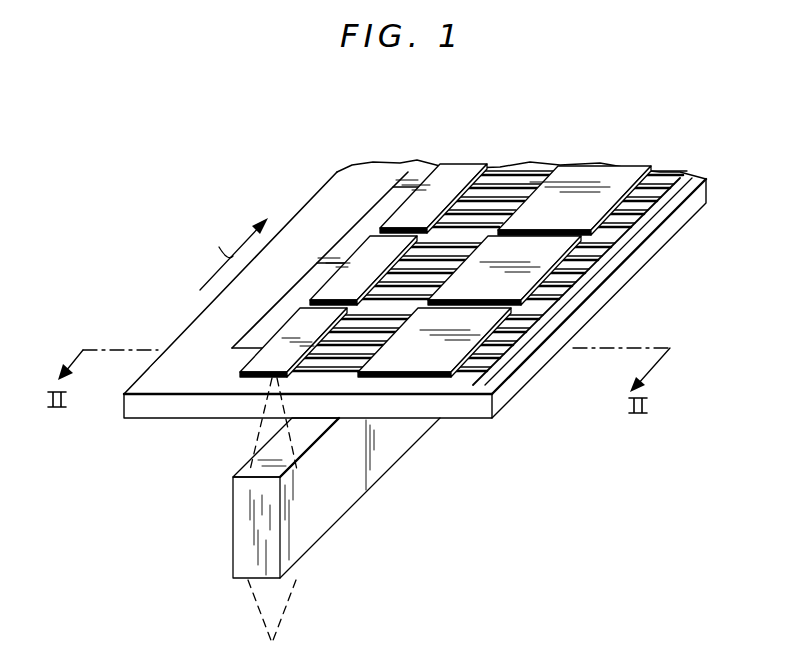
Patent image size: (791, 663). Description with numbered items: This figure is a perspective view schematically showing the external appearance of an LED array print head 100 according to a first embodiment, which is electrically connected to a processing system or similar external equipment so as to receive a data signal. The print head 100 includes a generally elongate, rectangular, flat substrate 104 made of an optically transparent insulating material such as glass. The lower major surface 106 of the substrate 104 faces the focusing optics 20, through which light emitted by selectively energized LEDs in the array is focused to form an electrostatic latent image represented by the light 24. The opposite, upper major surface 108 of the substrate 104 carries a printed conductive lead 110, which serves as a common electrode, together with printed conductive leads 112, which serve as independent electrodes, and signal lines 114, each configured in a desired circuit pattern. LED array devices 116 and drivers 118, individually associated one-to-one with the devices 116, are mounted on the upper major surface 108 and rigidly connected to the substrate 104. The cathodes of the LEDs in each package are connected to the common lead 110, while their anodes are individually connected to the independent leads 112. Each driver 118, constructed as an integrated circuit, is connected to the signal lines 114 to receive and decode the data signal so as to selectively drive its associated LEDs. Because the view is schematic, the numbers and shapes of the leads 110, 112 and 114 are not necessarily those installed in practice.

The LED array print head 100 is at (207, 190).
The substrate 104 is at (124, 414).
The lower major surface 106 is at (510, 390).
The upper major surface 108 is at (186, 340).
The printed conductive lead 110 is at (378, 194).
The printed conductive leads 112 is at (515, 178).
The signal lines 114 is at (620, 220).
The LED array devices 116 is at (455, 168).
The drivers 118 is at (603, 176).
The optics 20 is at (387, 455).
The light 24 is at (262, 436).